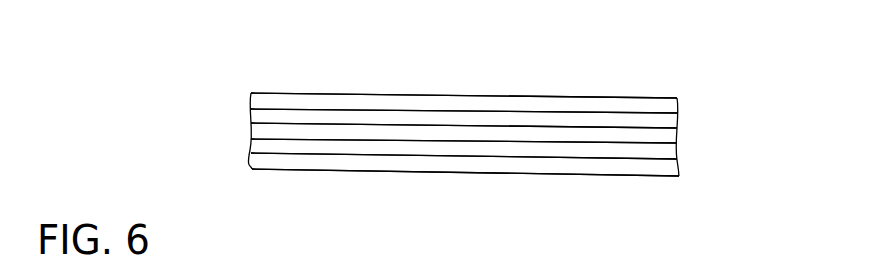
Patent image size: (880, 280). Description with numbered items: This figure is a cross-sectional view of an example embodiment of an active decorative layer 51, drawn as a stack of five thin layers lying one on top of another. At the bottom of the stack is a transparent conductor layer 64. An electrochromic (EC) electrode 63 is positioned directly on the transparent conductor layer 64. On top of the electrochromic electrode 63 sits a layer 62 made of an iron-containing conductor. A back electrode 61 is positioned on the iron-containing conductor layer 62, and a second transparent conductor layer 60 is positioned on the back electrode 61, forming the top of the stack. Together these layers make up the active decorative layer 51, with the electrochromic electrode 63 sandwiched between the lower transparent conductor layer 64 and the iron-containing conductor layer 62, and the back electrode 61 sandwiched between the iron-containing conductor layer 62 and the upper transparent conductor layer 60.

The active decorative layer 51 is at (676, 83).
The transparent conductor layer 60 is at (658, 106).
The back electrode 61 is at (257, 116).
The layer made of an iron-containing conductor 62 is at (658, 134).
The electrochromic (EC) electrode 63 is at (257, 147).
The transparent conductor layer 64 is at (658, 168).